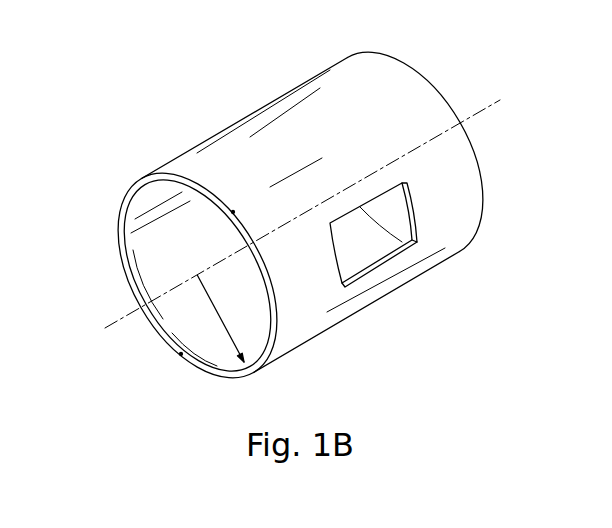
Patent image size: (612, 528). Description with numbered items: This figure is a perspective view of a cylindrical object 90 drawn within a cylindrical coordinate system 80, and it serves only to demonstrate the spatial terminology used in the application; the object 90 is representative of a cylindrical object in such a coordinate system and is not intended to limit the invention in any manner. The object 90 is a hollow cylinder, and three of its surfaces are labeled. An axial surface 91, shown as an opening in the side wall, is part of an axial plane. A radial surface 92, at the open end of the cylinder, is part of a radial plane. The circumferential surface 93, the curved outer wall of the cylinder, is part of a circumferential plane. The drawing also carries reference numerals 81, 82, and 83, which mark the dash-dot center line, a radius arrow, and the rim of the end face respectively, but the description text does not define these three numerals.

The cylindrical coordinate system 80 is at (440, 82).
The central axis 81 is at (105, 328).
The inner radius 82 is at (228, 331).
The front end face rim 83 is at (125, 200).
The object 90 is at (338, 57).
The axial surface 91 is at (379, 259).
The radial surface 92 is at (198, 363).
The circumferential surface 93 is at (270, 133).